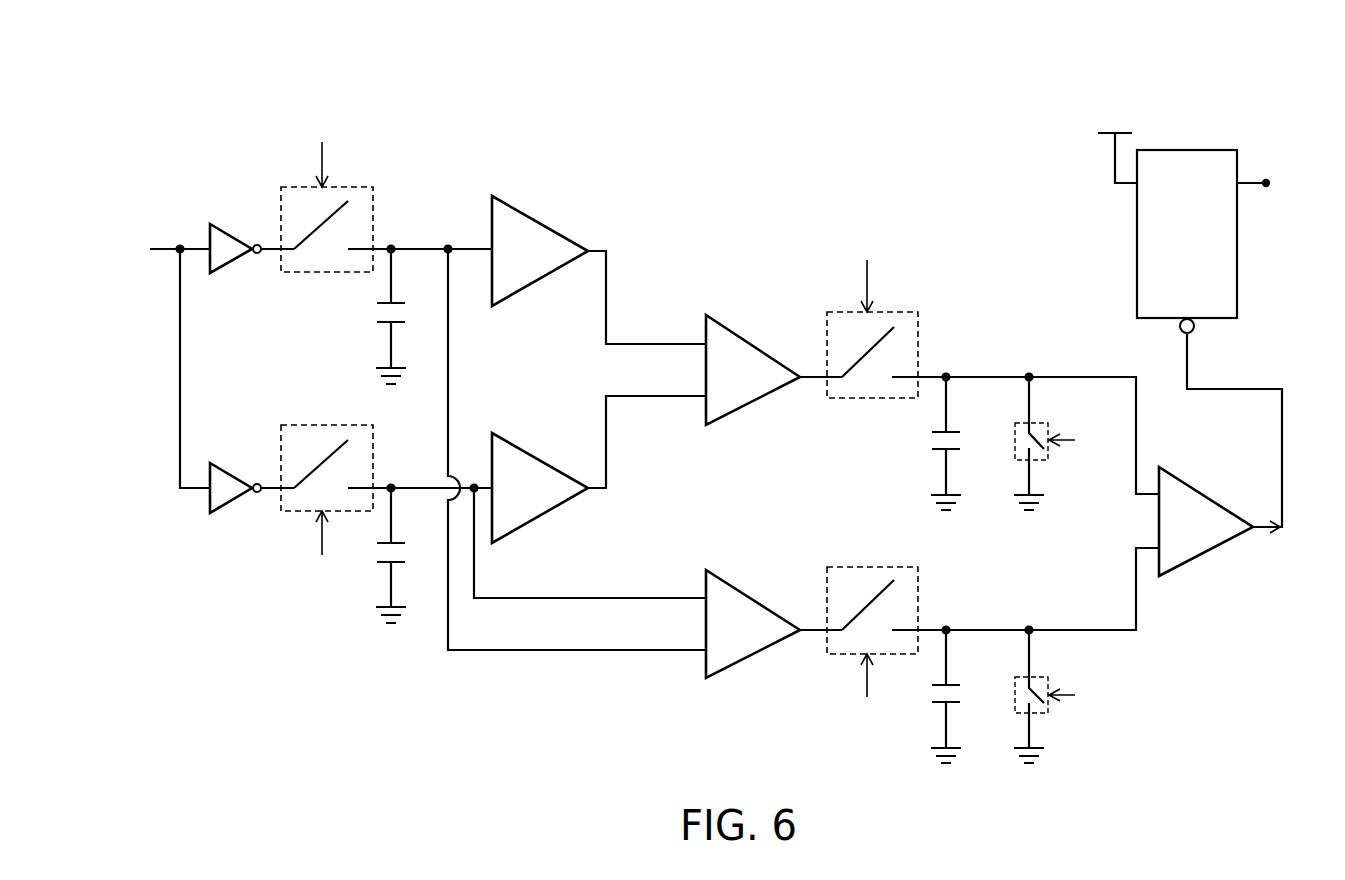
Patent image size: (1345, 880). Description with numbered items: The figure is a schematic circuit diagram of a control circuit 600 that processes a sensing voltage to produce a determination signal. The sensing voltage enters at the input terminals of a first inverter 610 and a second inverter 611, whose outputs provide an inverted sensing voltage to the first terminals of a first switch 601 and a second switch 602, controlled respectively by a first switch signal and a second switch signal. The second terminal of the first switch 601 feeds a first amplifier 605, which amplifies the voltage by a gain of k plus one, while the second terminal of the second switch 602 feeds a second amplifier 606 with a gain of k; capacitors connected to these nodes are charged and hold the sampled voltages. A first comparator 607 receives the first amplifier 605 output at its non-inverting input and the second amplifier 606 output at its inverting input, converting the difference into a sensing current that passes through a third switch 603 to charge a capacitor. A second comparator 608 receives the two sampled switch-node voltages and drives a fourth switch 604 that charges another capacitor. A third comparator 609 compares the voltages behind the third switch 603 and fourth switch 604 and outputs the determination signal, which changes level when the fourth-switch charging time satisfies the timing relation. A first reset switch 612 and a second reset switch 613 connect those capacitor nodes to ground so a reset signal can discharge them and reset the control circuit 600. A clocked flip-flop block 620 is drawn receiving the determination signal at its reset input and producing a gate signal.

The control circuit 600 is at (1273, 790).
The first switch 601 is at (328, 272).
The second switch 602 is at (328, 425).
The third switch 603 is at (847, 312).
The fourth switch 604 is at (890, 567).
The first amplifier 605 is at (540, 223).
The second amplifier 606 is at (540, 460).
The first comparator 607 is at (755, 347).
The second comparator 608 is at (755, 601).
The third comparator 609 is at (1207, 497).
The first inverter 610 is at (235, 237).
The second inverter 611 is at (235, 477).
The first reset switch 612 is at (1038, 422).
The second reset switch 613 is at (1038, 677).
The flip-flop 620 is at (1187, 150).